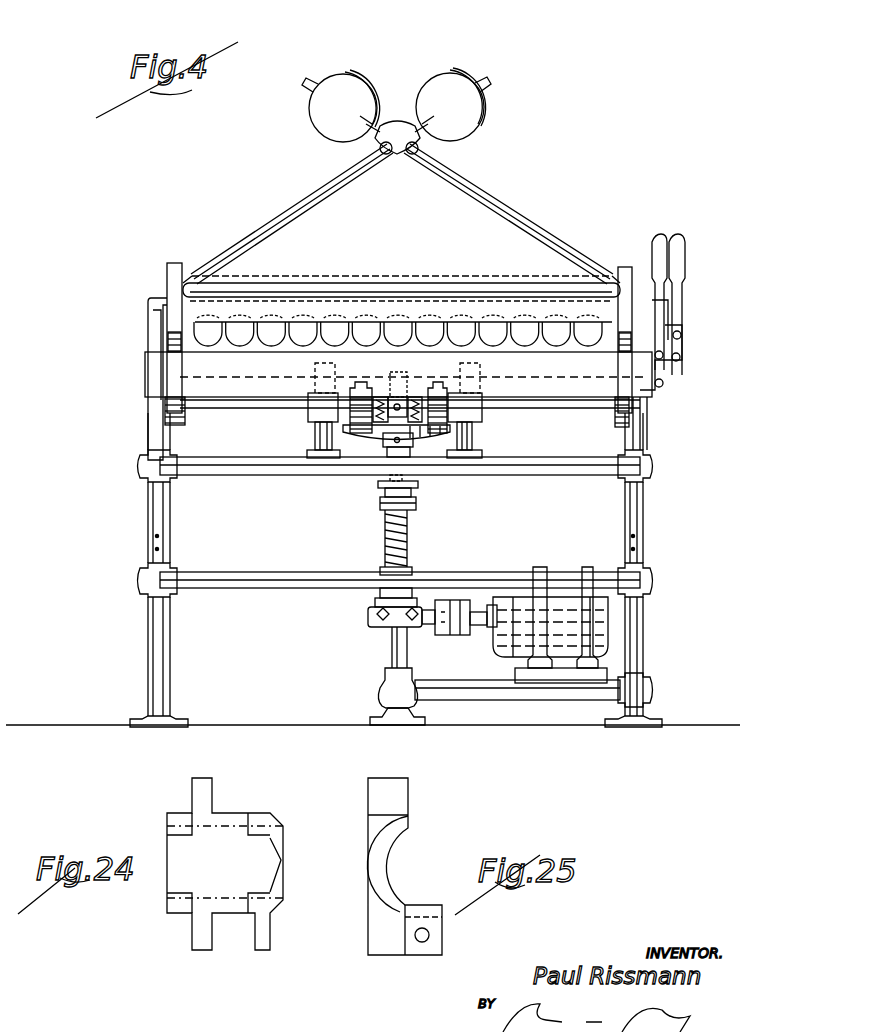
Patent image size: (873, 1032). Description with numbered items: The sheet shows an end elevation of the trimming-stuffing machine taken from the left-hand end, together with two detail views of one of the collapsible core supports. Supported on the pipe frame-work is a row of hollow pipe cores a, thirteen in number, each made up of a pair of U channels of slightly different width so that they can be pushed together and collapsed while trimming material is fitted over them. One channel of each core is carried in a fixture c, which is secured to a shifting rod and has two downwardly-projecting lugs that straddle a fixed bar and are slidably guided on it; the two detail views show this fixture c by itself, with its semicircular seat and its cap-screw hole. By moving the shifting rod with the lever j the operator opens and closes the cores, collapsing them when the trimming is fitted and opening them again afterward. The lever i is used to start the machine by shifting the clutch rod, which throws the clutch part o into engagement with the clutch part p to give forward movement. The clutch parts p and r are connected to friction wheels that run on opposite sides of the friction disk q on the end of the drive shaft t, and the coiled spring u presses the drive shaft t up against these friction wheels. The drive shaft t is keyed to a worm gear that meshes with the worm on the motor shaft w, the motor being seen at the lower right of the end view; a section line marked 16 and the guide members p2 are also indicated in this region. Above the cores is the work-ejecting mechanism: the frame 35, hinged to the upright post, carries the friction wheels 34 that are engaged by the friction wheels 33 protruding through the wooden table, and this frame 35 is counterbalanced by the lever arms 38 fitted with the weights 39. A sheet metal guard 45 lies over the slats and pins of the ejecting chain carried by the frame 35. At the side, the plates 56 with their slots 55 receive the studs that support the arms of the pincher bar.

In FIG. 4, the weights 39 is at (326, 138).
In FIG. 4, the lever arms 38 is at (320, 198).
In FIG. 4, the sheet metal guard 45 is at (412, 275).
In FIG. 4, the frame 35 is at (490, 287).
In FIG. 4, the friction wheels 34 is at (167, 333).
In FIG. 4, the plates 56 is at (148, 318).
In FIG. 4, the hollow pipe cores a is at (214, 340).
In FIG. 4, the friction wheels 33 is at (180, 422).
In FIG. 4, the slots 55 is at (650, 407).
In FIG. 4, the lever i is at (655, 248).
In FIG. 4, the lever j is at (686, 250).
In FIG. 4, the guide members p2 is at (362, 375).
In FIG. 4, the clutch part p is at (340, 425).
In FIG. 4, the clutch part o is at (384, 400).
In FIG. 4, the friction disk q is at (384, 422).
In FIG. 4, the clutch part r is at (412, 440).
In FIG. 4, the drive shaft t is at (412, 490).
In FIG. 4, the coiled spring u is at (410, 538).
In FIG. 4, the section line / gear box 16 is at (436, 567).
In FIG. 4, the motor shaft w is at (490, 630).
In FIG. 24, the fixture c is at (165, 830).
In FIG. 25, the fixture c is at (368, 896).